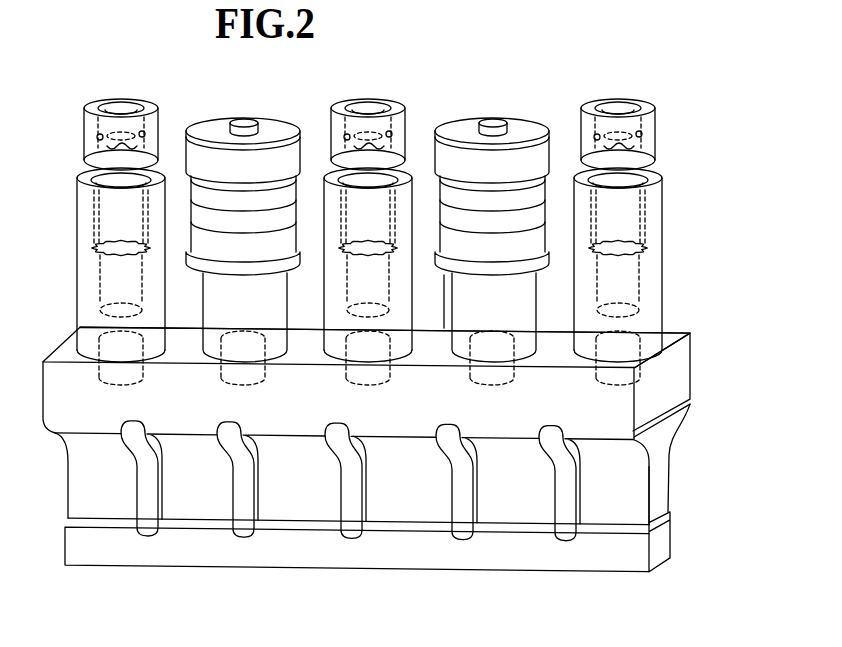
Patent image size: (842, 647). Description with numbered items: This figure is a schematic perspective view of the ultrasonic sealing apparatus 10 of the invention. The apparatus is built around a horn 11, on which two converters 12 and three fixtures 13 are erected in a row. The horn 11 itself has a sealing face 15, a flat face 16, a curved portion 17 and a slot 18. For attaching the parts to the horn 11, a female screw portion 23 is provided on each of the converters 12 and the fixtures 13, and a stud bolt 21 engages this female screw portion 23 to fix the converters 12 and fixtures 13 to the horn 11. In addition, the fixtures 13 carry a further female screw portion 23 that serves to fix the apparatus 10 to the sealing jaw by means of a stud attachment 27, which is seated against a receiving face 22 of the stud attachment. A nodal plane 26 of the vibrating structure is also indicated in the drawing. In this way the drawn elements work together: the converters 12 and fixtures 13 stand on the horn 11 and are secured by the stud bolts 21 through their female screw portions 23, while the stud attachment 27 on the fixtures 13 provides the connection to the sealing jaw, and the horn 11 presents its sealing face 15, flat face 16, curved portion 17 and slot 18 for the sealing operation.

The ultrasonic sealing apparatus 10 is at (638, 68).
The horn 11 is at (703, 393).
The converter 12 is at (243, 118).
The fixture 13 is at (663, 196).
The sealing face 15 is at (363, 569).
The flat face 16 is at (552, 330).
The curved portion 17 is at (678, 434).
The slot 18 is at (140, 480).
The stud bolt 21 is at (102, 366).
The receiving face of stud attachment 22 is at (97, 238).
The female screw portion 23 is at (104, 135).
The nodal plane 26 is at (645, 265).
The stud attachment 27 is at (640, 242).